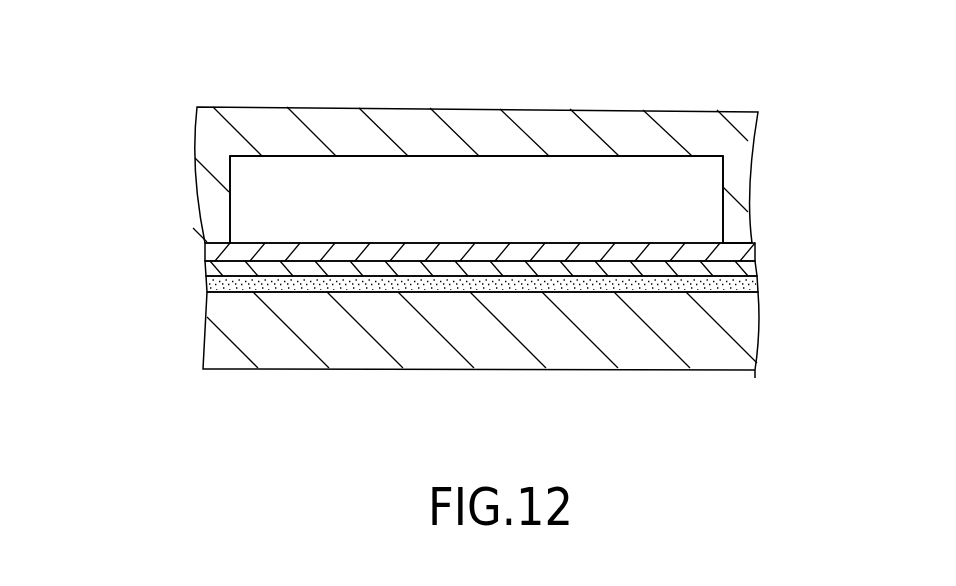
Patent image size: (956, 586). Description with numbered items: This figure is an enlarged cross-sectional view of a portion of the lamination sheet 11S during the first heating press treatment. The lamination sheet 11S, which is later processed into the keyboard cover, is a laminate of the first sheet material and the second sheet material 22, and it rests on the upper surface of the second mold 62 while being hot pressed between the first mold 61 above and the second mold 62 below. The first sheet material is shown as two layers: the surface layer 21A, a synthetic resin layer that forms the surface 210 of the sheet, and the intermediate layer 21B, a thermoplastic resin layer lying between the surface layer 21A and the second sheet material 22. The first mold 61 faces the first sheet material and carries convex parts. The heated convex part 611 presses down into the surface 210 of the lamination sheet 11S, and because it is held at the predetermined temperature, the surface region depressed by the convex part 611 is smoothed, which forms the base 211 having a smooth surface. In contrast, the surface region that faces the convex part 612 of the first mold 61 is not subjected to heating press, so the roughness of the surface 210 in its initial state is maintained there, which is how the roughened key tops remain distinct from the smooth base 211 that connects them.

The first mold 61 is at (200, 141).
The convex part 612 is at (383, 156).
The convex part 611 is at (223, 242).
The surface 210 is at (525, 243).
The base 211 is at (743, 247).
The lamination sheet 11S is at (105, 220).
The surface layer 21A is at (205, 250).
The intermediate layer 21B is at (205, 268).
The second sheet material 22 is at (205, 284).
The second mold 62 is at (214, 330).